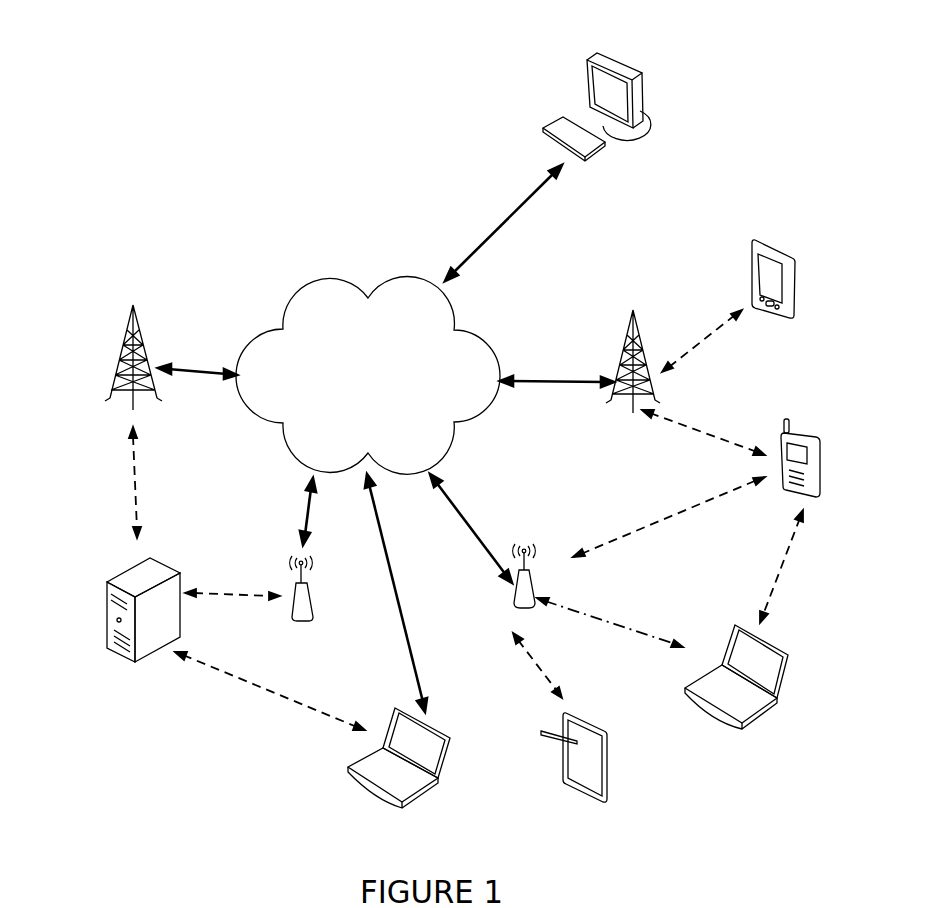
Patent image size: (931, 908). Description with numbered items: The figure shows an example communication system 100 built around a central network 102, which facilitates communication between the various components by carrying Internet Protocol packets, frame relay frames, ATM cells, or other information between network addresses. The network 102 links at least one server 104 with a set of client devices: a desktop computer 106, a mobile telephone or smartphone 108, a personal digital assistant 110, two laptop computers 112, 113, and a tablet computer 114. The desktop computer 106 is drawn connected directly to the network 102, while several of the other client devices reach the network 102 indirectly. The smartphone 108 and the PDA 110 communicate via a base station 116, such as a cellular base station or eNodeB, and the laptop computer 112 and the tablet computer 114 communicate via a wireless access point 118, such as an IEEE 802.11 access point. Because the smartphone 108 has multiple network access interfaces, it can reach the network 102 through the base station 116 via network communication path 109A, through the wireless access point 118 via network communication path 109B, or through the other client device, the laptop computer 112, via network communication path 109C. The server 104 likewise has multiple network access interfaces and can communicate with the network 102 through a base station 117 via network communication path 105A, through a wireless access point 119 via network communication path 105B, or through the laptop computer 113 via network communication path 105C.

The communication system 100 is at (202, 149).
The network 102 is at (288, 295).
The server 104 is at (120, 575).
The network communication path 105A is at (132, 471).
The network communication path 105B is at (225, 592).
The network communication path 105C is at (281, 694).
The desktop computer 106 is at (583, 58).
The mobile telephone or smartphone 108 is at (818, 440).
The network communication path 109A is at (722, 437).
The network communication path 109B is at (632, 520).
The network communication path 109C is at (775, 580).
The personal digital assistant (PDA) 110 is at (788, 255).
The laptop computer 112 is at (790, 665).
The laptop computer 113 is at (452, 746).
The tablet computer 114 is at (607, 752).
The base station 116 is at (613, 352).
The base station 117 is at (113, 350).
The wireless access point 118 is at (536, 585).
The wireless access point 119 is at (307, 622).